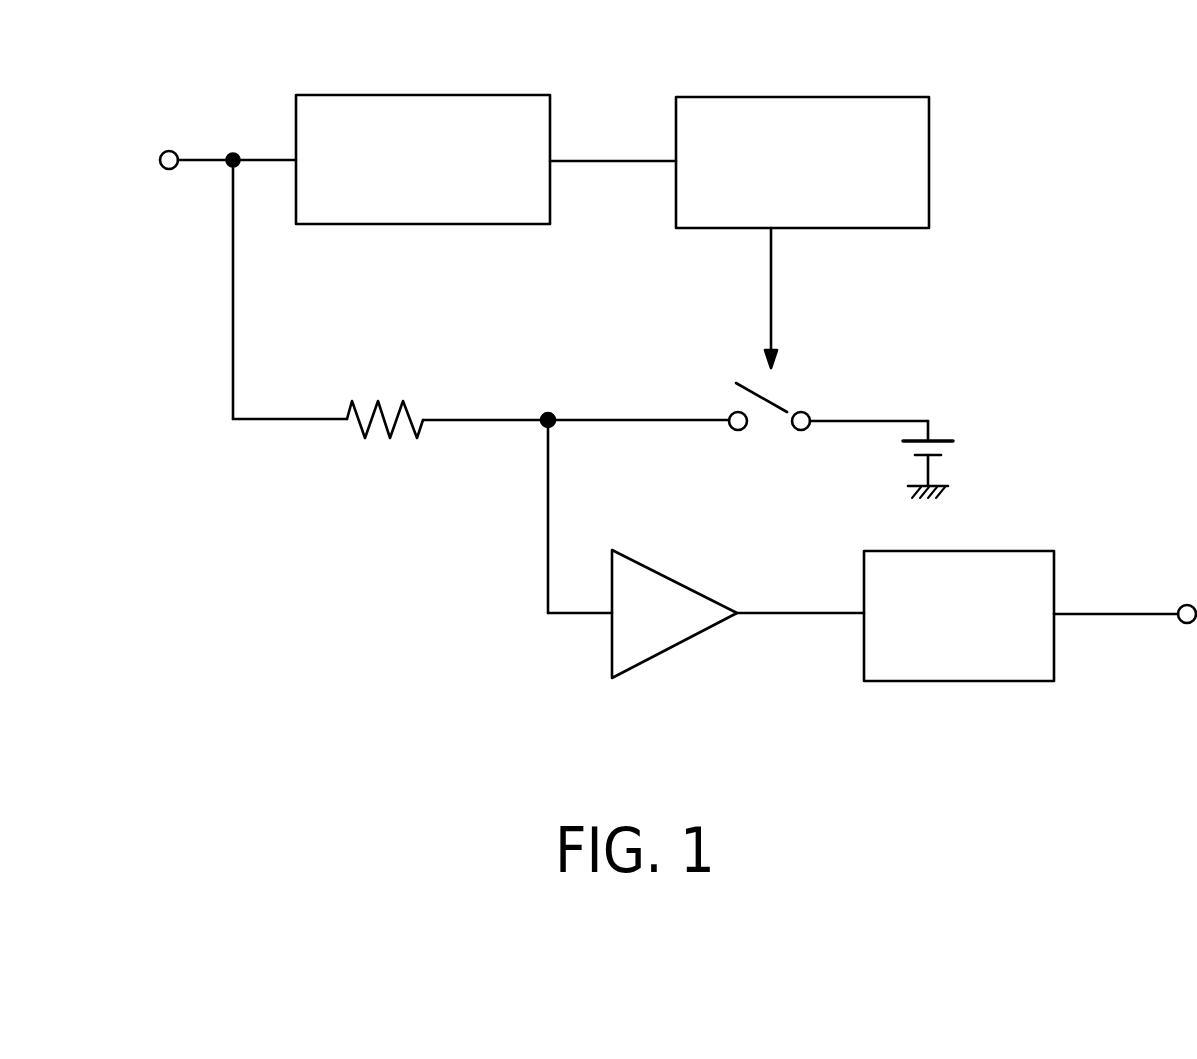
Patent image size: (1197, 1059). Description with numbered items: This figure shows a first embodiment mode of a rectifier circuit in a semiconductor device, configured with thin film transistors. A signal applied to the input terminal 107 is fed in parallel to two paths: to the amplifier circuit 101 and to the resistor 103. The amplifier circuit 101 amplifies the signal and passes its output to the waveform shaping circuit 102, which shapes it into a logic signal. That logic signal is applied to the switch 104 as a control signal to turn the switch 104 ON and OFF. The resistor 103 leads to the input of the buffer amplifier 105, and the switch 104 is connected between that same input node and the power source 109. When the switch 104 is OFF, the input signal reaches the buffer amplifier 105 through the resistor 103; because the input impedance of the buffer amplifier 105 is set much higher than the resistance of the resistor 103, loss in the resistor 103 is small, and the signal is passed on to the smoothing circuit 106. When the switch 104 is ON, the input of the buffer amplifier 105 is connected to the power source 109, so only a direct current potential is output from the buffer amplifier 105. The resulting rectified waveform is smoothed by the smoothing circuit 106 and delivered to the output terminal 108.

The amplifier circuit 101 is at (423, 159).
The waveform shaping circuit 102 is at (802, 232).
The resistor 103 is at (382, 447).
The switch 104 is at (767, 442).
The buffer amplifier 105 is at (683, 655).
The smoothing circuit 106 is at (959, 616).
The input terminal 107 is at (169, 137).
The output terminal 108 is at (1173, 637).
The power source 109 is at (964, 433).